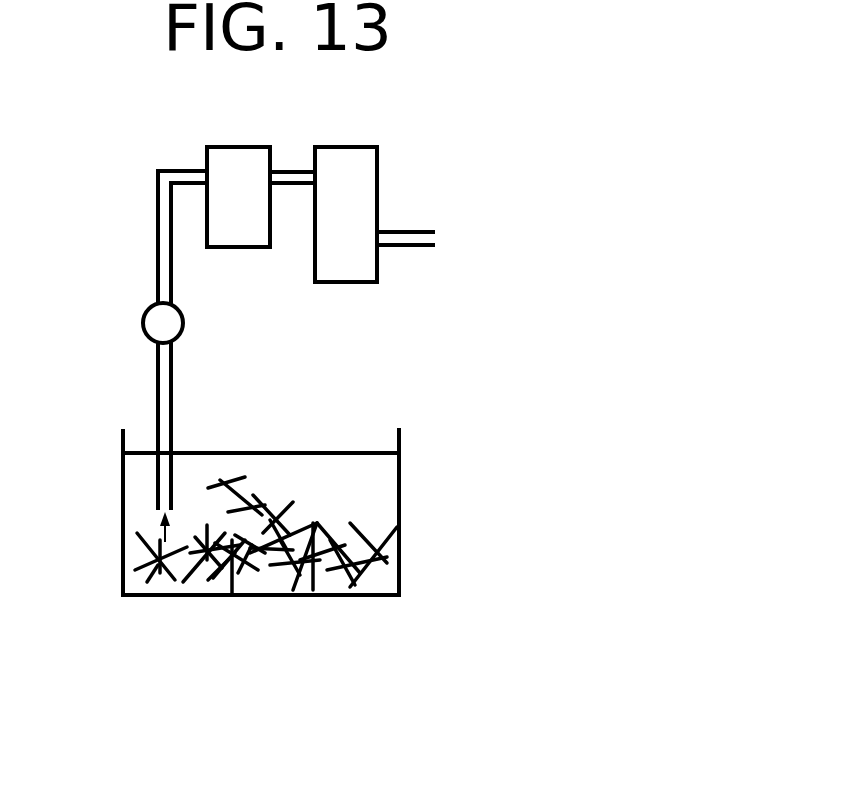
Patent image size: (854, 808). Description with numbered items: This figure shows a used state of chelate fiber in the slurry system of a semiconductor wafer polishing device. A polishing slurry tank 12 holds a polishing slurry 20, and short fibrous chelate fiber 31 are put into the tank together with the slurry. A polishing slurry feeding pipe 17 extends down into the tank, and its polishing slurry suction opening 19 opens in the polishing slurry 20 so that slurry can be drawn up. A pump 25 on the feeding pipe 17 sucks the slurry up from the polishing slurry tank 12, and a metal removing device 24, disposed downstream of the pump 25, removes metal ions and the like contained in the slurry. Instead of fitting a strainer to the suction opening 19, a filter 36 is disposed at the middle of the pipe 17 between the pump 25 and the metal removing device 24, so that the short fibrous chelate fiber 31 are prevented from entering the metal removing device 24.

The polishing slurry tank 12 is at (400, 437).
The polishing slurry feeding pipe 17 is at (157, 230).
The polishing slurry suction opening 19 is at (155, 498).
The polishing slurry 20 is at (283, 470).
The metal removing device 24 is at (372, 177).
The pump 25 is at (145, 330).
The short fibrous chelate fiber 31 is at (390, 532).
The filter 36 is at (208, 160).